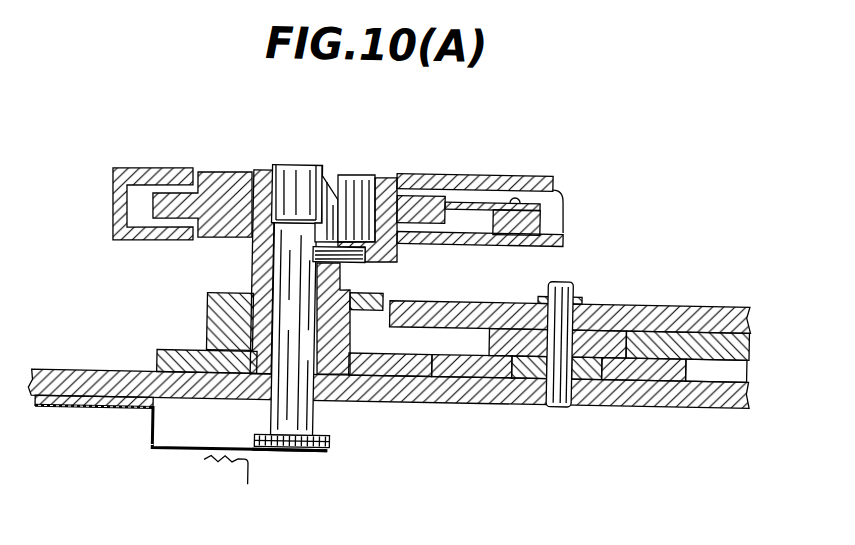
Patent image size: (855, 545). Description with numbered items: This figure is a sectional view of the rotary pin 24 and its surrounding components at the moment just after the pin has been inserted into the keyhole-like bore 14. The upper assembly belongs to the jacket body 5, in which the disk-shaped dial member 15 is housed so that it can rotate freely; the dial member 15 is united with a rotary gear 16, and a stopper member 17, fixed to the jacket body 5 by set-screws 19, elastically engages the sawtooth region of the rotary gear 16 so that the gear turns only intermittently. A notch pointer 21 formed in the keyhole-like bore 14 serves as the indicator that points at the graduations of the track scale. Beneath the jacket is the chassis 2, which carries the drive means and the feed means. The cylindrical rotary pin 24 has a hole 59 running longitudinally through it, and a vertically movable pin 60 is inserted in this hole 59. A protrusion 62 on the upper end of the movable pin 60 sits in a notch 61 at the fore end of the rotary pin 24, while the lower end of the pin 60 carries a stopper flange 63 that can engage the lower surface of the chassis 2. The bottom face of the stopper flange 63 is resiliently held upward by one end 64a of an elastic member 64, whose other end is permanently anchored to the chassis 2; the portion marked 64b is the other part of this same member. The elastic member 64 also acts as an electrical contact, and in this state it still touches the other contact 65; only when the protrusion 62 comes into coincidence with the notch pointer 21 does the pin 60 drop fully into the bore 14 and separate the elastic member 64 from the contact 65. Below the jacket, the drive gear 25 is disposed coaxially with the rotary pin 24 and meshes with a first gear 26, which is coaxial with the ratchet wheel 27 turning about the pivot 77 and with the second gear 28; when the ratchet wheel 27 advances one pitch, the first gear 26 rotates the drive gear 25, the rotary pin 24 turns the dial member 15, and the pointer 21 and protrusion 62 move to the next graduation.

The chassis 2 is at (74, 374).
The jacket body 5 is at (146, 173).
The keyhole-like bore 14 is at (255, 205).
The dial member 15 is at (213, 181).
The rotary gear 16 is at (423, 203).
The stopper member 17 is at (470, 202).
The set-screws 19 is at (511, 194).
The notch pointer 21 is at (368, 186).
The rotary pin 24 is at (250, 173).
The drive gear 25 is at (416, 368).
The first gear 26 is at (481, 367).
The ratchet wheel 27 is at (640, 299).
The second gear 28 is at (618, 339).
The hole 59 is at (305, 172).
The vertically movable pin 60 is at (282, 268).
The notch 61 is at (339, 194).
The protrusion 62 is at (366, 256).
The stopper flange 63 is at (336, 440).
The elastic member 64 is at (166, 450).
The end of elastic member 64a is at (90, 416).
The bracket lower flange 64b is at (303, 451).
The contact 65 is at (220, 460).
The pivot 77 is at (565, 275).